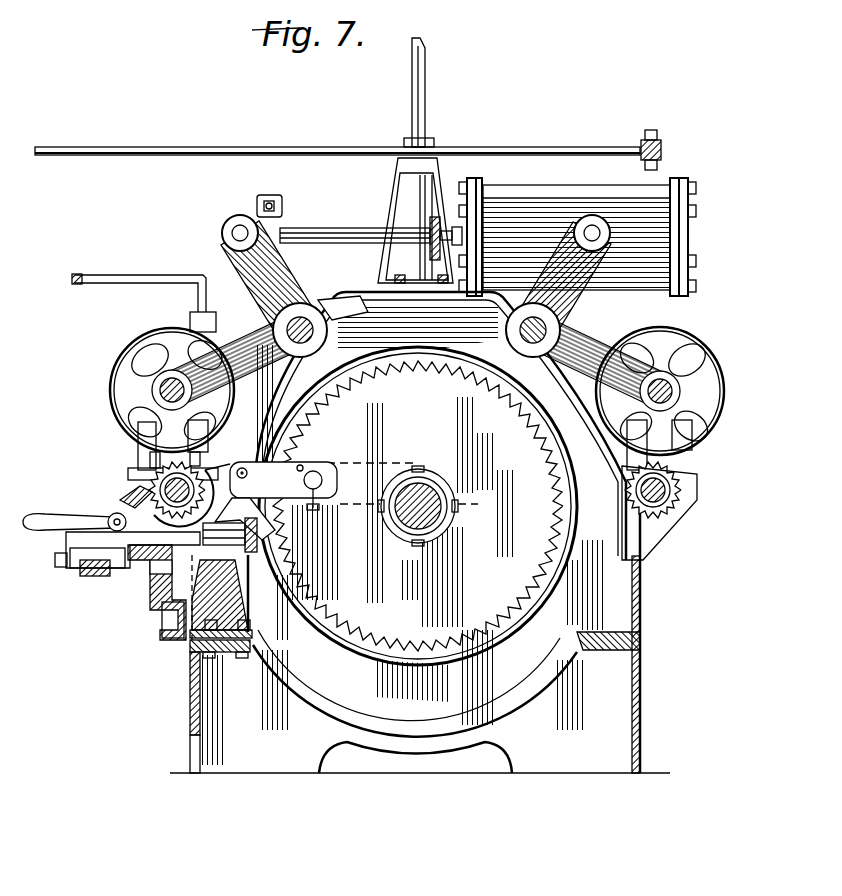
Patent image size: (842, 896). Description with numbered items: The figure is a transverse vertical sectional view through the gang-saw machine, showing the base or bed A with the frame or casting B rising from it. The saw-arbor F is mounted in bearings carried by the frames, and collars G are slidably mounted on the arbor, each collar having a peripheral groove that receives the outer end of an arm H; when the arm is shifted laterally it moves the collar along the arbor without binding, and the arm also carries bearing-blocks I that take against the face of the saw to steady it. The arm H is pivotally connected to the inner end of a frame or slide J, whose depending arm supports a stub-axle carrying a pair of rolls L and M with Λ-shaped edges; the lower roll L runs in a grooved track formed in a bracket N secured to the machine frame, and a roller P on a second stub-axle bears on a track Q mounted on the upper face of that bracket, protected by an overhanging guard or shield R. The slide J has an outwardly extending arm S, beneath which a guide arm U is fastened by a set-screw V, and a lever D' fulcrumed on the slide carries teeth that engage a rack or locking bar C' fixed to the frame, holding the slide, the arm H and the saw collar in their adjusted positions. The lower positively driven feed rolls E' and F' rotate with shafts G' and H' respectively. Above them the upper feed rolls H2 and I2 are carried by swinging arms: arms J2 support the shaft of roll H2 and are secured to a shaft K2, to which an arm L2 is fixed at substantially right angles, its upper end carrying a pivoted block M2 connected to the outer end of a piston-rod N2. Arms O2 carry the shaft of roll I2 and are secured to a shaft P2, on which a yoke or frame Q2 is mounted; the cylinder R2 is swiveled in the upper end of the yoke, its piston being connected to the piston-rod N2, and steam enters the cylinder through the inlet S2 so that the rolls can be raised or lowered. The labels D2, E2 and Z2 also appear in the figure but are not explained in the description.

The base or bed A is at (280, 747).
The frame or casting B is at (418, 514).
The saw-arbor F is at (418, 477).
The collar G is at (402, 510).
The bar D2 is at (492, 156).
The steam-inlet S2 is at (418, 104).
The end block E2 is at (664, 148).
The piston-rod N2 is at (349, 234).
The cylinder R2 is at (598, 218).
The arm L2 is at (237, 266).
The pivoted block M2 is at (265, 222).
The arms J2 is at (260, 376).
The shaft K2 is at (305, 323).
The upper feed roll H2 is at (135, 392).
The rod Z2 is at (118, 286).
The yoke or frame Q2 is at (567, 245).
The arms O2 is at (590, 362).
The shaft P2 is at (540, 323).
The upper feed roll I2 is at (726, 391).
The shaft H' is at (630, 484).
The lower feed roll F' is at (678, 513).
The frame or slide J is at (238, 497).
The bearing-blocks I is at (320, 476).
The arm H is at (316, 449).
The shaft G' is at (208, 476).
The lower feed roll E' is at (145, 489).
The rack or locking bar C' is at (118, 494).
The lever D' is at (74, 508).
The roller P is at (268, 536).
The guard or shield R is at (268, 515).
The guide arm U is at (100, 560).
The arm S is at (97, 548).
The set-screw V is at (57, 558).
The roll L is at (160, 570).
The roll M is at (165, 566).
The casting or bracket N is at (183, 595).
The track Q is at (222, 556).